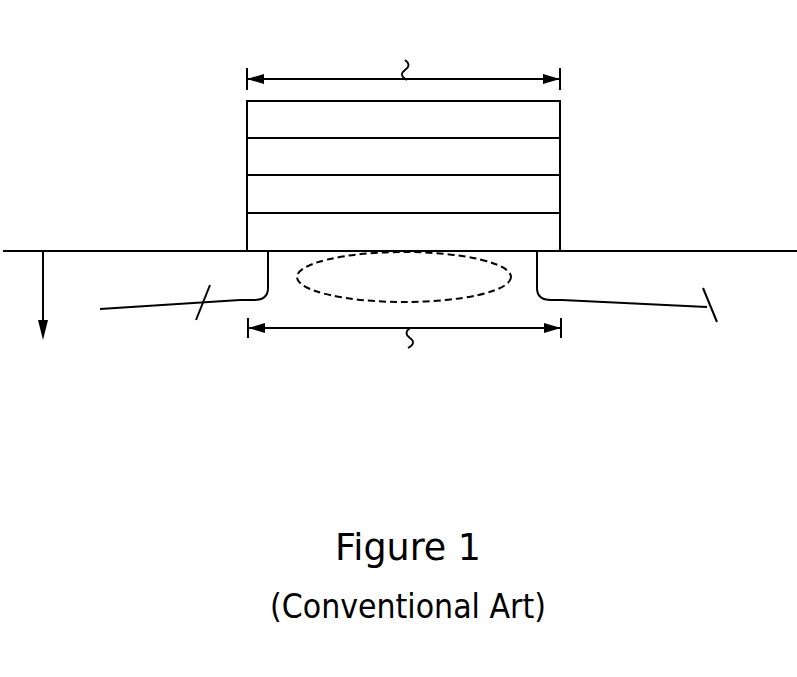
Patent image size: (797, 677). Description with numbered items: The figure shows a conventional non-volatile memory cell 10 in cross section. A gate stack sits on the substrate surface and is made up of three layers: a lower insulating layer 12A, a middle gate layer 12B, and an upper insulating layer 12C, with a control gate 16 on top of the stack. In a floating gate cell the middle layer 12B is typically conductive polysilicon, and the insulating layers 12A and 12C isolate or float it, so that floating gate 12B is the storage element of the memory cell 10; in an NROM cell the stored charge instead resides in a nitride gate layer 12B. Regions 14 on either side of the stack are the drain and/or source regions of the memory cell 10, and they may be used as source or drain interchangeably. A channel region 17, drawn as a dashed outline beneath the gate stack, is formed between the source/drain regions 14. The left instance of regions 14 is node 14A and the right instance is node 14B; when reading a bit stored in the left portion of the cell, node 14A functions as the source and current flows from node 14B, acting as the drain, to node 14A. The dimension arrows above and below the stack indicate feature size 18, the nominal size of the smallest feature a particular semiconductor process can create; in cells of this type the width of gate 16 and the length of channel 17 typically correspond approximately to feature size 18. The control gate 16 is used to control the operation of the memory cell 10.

The memory cell 10 is at (94, 151).
The insulating layer 12A is at (471, 246).
The floating gate layer 12B is at (386, 209).
The insulating layer 12C is at (296, 171).
The control gate 16 is at (390, 134).
The source/drain regions 14 is at (162, 289).
The left source/drain node 14A is at (184, 320).
The right source/drain node 14B is at (721, 321).
The channel region 17 is at (392, 289).
The feature size 18 is at (404, 206).